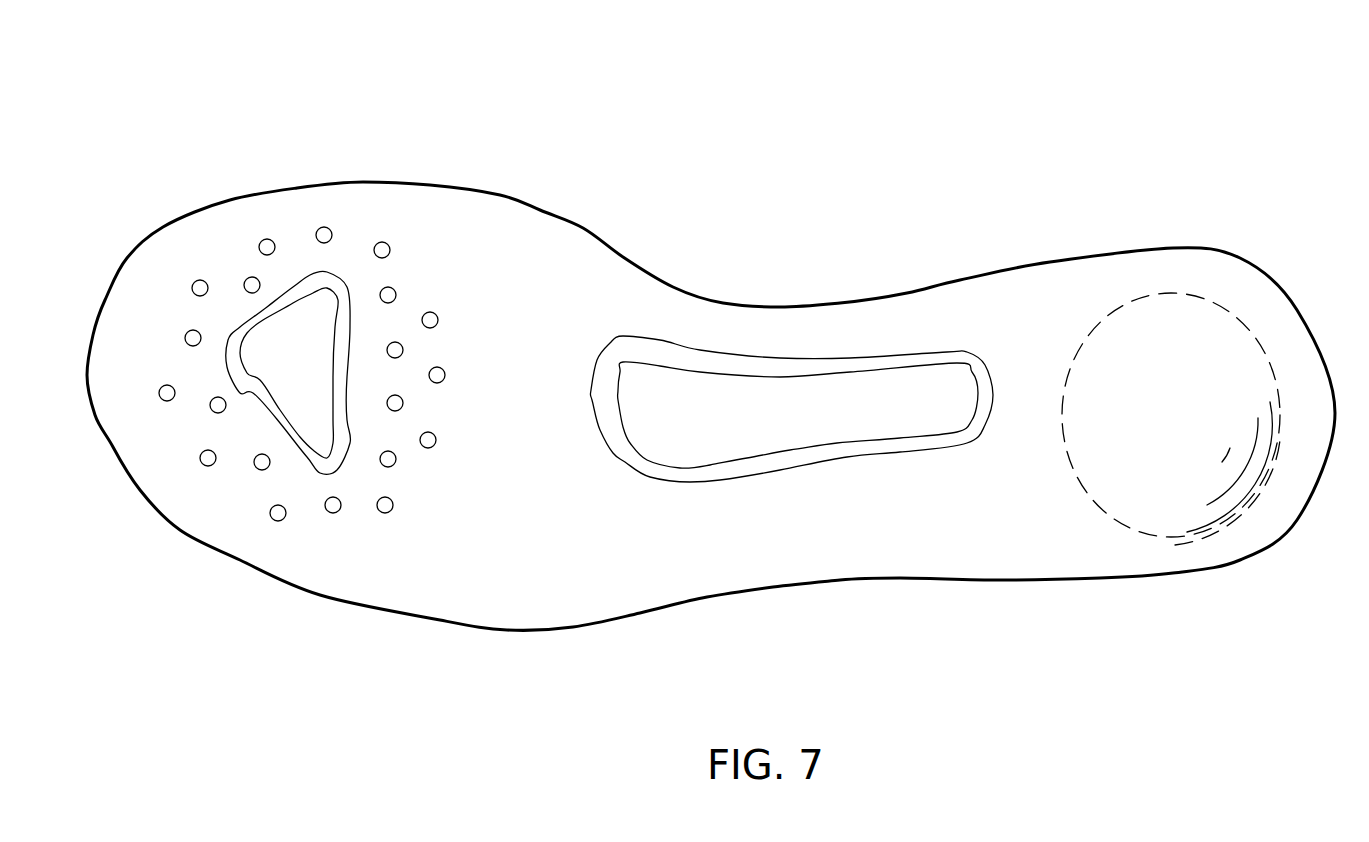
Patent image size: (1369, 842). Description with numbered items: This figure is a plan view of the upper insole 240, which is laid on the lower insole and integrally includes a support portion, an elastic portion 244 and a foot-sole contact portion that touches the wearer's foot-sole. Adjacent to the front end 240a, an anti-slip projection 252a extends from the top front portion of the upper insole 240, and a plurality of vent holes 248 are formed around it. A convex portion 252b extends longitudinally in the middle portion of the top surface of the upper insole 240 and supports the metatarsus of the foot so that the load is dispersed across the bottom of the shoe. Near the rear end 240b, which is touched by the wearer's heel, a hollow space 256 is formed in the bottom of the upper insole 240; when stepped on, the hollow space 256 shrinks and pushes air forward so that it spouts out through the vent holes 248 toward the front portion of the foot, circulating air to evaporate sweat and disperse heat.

The upper insole 240 is at (757, 245).
The front end 240a is at (117, 227).
The rear end 240b is at (1327, 300).
The elastic portion 244 is at (562, 257).
The vent holes 248 is at (380, 245).
The anti-slip projection 252a is at (295, 390).
The convex portion 252b is at (842, 408).
The hollow space 256 is at (1128, 490).